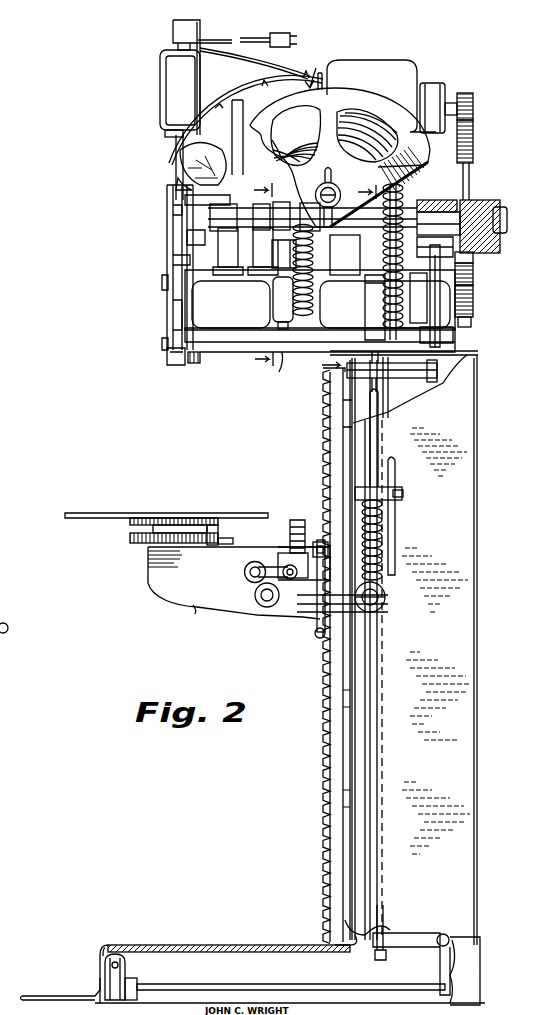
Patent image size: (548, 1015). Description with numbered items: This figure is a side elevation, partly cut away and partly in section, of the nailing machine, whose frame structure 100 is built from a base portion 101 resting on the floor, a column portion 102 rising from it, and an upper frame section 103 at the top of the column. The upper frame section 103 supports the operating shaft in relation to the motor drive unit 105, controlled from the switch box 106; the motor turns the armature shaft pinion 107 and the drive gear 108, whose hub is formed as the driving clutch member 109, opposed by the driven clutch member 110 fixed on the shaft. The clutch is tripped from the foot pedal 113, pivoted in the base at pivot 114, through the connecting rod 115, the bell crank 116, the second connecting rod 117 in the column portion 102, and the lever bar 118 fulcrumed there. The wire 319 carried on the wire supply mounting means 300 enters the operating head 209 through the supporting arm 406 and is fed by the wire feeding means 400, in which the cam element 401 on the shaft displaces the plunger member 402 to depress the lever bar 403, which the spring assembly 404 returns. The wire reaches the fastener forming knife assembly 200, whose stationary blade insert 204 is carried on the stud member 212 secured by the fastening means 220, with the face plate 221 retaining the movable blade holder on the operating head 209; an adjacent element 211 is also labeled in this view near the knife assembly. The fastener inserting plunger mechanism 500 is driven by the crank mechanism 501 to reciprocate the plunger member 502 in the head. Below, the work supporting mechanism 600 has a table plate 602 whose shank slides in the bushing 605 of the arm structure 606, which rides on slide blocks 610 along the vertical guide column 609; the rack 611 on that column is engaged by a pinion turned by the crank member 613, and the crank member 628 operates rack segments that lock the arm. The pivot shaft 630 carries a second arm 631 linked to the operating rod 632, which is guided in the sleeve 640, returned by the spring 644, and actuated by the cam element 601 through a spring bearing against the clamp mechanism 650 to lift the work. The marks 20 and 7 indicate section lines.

The frame structure 100 is at (486, 752).
The base portion 101 is at (172, 945).
The column portion 102 is at (484, 546).
The upper frame section 103 is at (455, 340).
The motor drive unit 105 is at (417, 73).
The switch box 106 is at (162, 80).
The armature shaft pinion 107 is at (472, 100).
The drive gear 108 is at (473, 147).
The driving clutch member 109 is at (478, 200).
The driven clutch member 110 is at (415, 203).
The foot pedal 113 is at (52, 993).
The pedal pivot 114 is at (125, 968).
The connecting rod 115 is at (224, 986).
The bell crank 116 is at (410, 948).
The second connecting rod 117 is at (395, 914).
The lever bar 118 is at (400, 378).
The section line 20 is at (340, 274).
The section line 7 is at (259, 274).
The fastener forming knife assembly 200 is at (164, 372).
The stationary blade insert 204 is at (479, 262).
The operating head 209 is at (175, 337).
The ratchet 211 is at (474, 276).
The stud member 212 is at (474, 296).
The fastening means 220 is at (199, 367).
The face plate 221 is at (170, 304).
The wire supply mounting means 300 is at (161, 113).
The wire 319 is at (232, 103).
The wire feeding means 400 is at (268, 305).
The cam element 401 is at (278, 196).
The plunger member 402 is at (277, 326).
The lever bar 403 is at (281, 369).
The spring assembly 404 is at (176, 184).
The supporting arm 406 is at (170, 228).
The fastener inserting plunger mechanism 500 is at (194, 241).
The crank mechanism 501 is at (201, 167).
The plunger member 502 is at (172, 264).
The work supporting mechanism 600 is at (155, 594).
The cam element 601 is at (402, 196).
The table plate 602 is at (122, 512).
The bushing 605 is at (136, 530).
The arm structure 606 is at (199, 614).
The vertical guide column 609 is at (330, 408).
The slide blocks 610 is at (328, 504).
The rack 611 is at (323, 672).
The crank member 613 is at (315, 636).
The crank member 628 is at (244, 568).
The pivot shaft 630 is at (264, 609).
The second arm 631 is at (296, 610).
The operating rod 632 is at (390, 636).
The sleeve 640 is at (320, 340).
The spring 644 is at (443, 312).
The clamp mechanism 650 is at (402, 520).